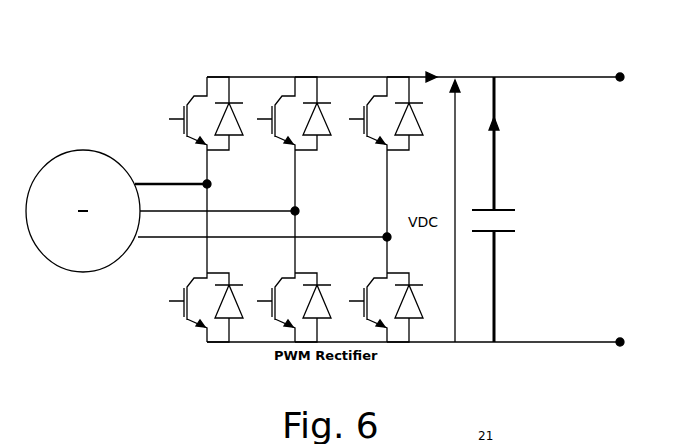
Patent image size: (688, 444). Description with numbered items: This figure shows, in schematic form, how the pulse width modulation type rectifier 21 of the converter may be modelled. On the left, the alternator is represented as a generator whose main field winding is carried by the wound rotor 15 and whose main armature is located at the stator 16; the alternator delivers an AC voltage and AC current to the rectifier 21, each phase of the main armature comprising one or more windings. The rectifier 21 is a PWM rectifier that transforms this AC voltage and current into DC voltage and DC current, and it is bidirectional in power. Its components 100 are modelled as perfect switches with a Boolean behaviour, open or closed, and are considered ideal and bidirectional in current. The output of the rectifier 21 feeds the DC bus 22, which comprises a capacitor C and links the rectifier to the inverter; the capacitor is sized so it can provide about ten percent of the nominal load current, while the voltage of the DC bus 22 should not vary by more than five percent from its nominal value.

The wound rotor 15 is at (83, 184).
The stator 16 is at (83, 150).
The PWM type rectifier 21 is at (333, 77).
The DC bus 22 is at (498, 260).
The components 100 is at (323, 138).